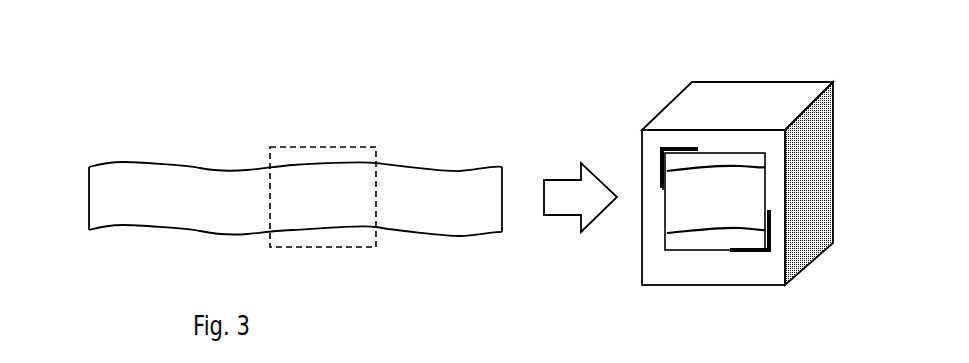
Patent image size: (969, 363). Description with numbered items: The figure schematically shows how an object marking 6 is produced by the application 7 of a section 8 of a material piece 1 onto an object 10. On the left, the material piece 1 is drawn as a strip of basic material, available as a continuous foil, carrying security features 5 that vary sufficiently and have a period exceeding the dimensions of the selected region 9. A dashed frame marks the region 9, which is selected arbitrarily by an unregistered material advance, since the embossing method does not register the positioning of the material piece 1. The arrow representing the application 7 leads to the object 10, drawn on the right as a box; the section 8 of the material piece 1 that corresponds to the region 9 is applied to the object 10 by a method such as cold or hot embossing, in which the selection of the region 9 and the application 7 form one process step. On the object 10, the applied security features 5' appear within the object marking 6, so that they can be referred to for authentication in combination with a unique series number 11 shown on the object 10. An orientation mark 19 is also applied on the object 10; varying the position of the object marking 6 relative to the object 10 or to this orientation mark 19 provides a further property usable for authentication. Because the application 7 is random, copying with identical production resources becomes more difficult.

The material piece 1 is at (142, 212).
The security features 5 is at (253, 137).
The region 9 is at (323, 248).
The application 7 is at (580, 203).
The object 10 is at (680, 122).
The series number 11 is at (655, 263).
The section 8 is at (755, 190).
The object marking 6 is at (668, 156).
The orientation mark 19 is at (663, 178).
The security features 5' is at (736, 113).